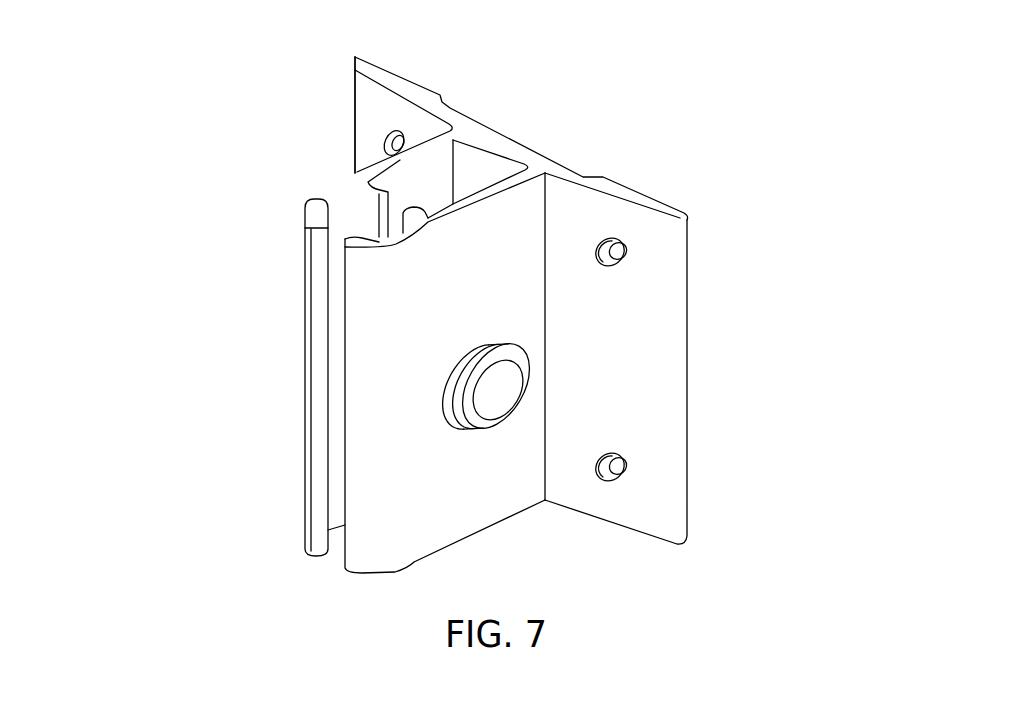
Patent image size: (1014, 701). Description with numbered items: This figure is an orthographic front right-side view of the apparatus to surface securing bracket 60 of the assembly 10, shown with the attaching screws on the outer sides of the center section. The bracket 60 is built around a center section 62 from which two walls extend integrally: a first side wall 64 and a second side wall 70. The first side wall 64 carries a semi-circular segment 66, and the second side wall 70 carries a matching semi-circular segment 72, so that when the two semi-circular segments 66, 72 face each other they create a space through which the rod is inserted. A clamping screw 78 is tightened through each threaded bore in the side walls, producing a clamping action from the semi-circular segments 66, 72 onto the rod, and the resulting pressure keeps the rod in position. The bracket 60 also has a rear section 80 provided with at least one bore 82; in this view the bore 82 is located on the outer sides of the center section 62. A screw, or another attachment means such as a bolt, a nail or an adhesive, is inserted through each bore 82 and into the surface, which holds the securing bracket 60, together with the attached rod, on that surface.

The glass clamp assembly 10 is at (130, 78).
The apparatus to surface securing bracket 60 is at (537, 133).
The center section 62 is at (310, 315).
The first side wall 64 is at (380, 495).
The second side wall 70 is at (390, 173).
The semi-circular segment 66 is at (345, 247).
The semi-circular segment 72 is at (350, 220).
The clamping screw 78 is at (500, 392).
The rear section 80 is at (610, 186).
The bore 82 is at (382, 142).